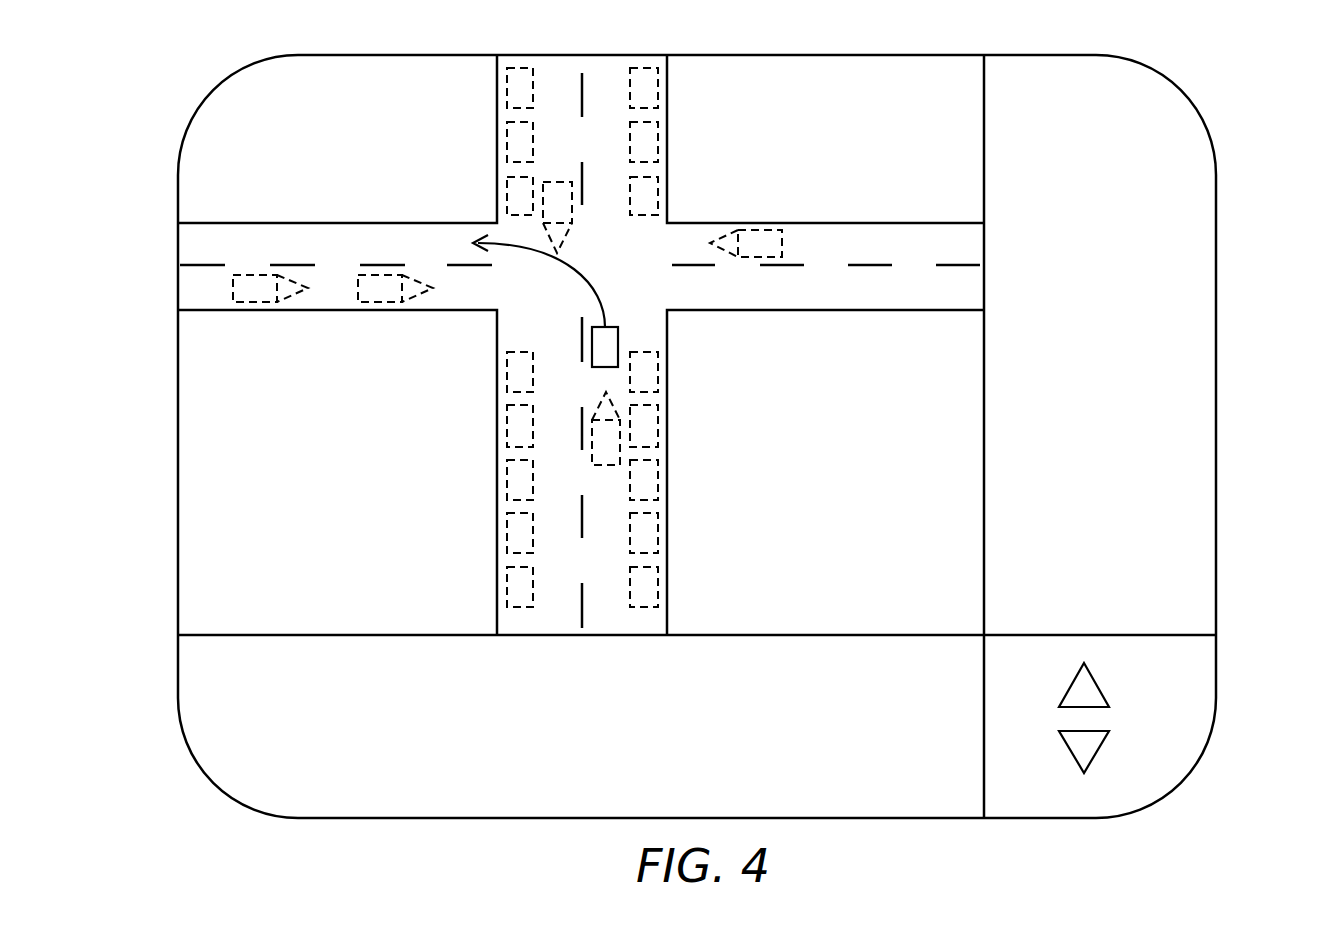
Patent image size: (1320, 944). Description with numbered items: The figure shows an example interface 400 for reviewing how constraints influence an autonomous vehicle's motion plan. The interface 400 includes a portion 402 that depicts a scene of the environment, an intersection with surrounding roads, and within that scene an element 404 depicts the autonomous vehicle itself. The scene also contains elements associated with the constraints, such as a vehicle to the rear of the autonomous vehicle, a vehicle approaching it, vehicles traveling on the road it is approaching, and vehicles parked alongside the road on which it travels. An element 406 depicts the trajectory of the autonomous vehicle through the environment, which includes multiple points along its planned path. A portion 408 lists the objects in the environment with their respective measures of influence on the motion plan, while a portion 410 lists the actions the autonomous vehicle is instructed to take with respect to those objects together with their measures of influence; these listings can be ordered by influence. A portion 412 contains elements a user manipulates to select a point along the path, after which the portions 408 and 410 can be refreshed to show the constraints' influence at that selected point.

The interface 400 is at (221, 52).
The portion 402 is at (177, 195).
The element 404 is at (618, 335).
The element 406 is at (491, 243).
The portion 408 is at (1216, 283).
The portion 410 is at (177, 686).
The portion 412 is at (1216, 683).